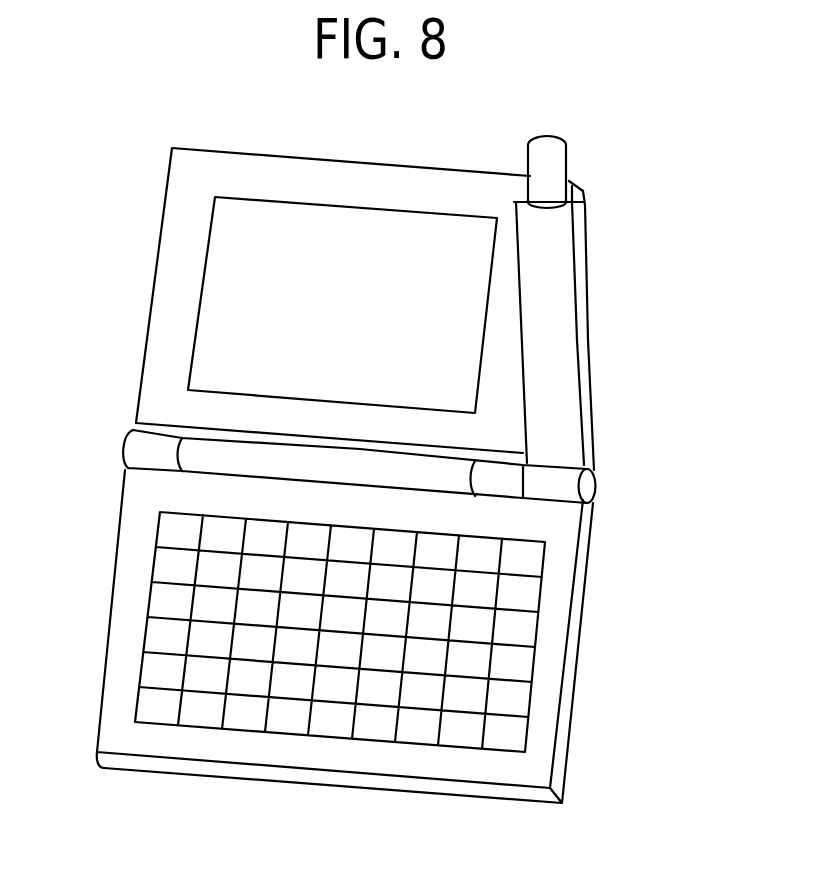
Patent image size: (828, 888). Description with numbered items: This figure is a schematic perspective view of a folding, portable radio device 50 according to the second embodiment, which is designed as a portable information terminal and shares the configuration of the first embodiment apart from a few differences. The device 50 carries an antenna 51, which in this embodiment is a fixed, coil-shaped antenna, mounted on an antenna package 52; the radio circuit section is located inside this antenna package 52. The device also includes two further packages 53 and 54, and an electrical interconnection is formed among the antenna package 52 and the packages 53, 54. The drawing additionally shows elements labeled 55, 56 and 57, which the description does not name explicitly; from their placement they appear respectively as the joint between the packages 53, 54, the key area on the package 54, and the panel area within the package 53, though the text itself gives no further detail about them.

The folding, portable radio device 50 is at (172, 115).
The antenna 51 is at (553, 170).
The antenna package 52 is at (586, 337).
The package 53 is at (172, 226).
The package 54 is at (575, 655).
The hinge 55 is at (582, 491).
The keyboard 56 is at (535, 707).
The display screen 57 is at (210, 308).